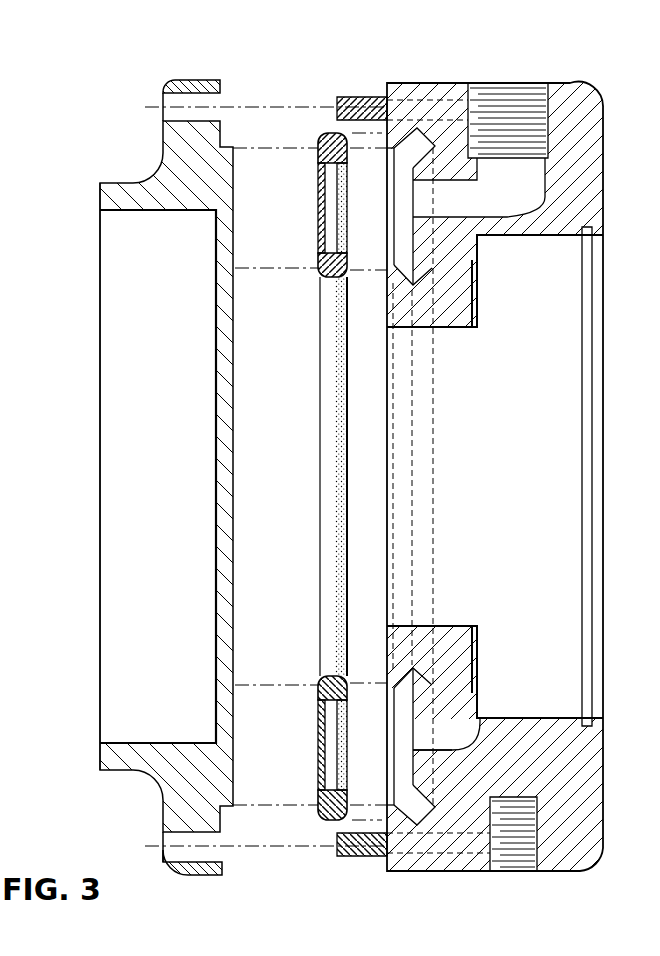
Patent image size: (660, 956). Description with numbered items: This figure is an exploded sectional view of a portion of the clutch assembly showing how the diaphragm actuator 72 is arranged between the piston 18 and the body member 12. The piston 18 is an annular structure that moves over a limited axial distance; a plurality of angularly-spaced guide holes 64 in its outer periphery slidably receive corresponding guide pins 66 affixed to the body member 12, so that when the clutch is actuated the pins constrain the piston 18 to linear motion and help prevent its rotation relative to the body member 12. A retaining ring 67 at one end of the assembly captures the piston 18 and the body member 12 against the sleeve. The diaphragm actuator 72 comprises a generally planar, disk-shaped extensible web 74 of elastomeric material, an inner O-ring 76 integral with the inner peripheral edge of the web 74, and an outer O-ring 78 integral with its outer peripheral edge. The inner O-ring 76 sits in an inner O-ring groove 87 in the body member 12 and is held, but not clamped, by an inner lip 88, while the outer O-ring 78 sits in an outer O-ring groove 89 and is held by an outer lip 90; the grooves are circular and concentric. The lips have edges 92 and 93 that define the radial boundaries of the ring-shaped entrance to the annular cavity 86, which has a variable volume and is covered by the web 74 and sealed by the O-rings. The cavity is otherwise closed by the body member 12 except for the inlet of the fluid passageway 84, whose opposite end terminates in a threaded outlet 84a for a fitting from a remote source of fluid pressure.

The body member 12 is at (594, 101).
The piston 18 is at (147, 174).
The guide holes 64 is at (180, 92).
The guide pins 66 is at (362, 97).
The retaining ring 67 is at (50, 476).
The diaphragm actuator 72 is at (312, 490).
The extensible web 74 is at (318, 207).
The inner O-ring 76 is at (323, 270).
The outer O-ring 78 is at (322, 140).
The fluid passageway 84 is at (522, 190).
The threaded outlet 84a is at (527, 97).
The annular cavity 86 is at (404, 216).
The inner O-ring groove 87 is at (432, 268).
The inner lip 88 is at (396, 285).
The outer O-ring groove 89 is at (416, 150).
The outer lip 90 is at (394, 150).
The edge of inner lip 92 is at (398, 262).
The edge of outer lip 93 is at (392, 158).